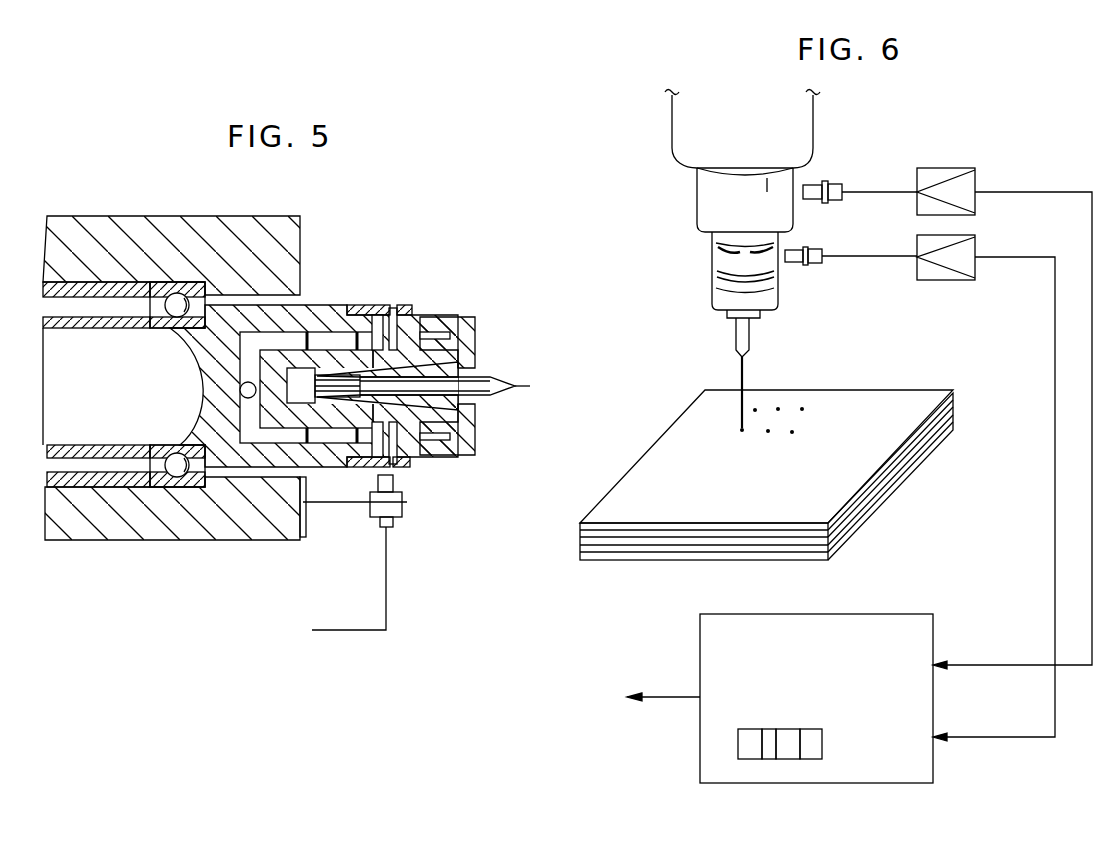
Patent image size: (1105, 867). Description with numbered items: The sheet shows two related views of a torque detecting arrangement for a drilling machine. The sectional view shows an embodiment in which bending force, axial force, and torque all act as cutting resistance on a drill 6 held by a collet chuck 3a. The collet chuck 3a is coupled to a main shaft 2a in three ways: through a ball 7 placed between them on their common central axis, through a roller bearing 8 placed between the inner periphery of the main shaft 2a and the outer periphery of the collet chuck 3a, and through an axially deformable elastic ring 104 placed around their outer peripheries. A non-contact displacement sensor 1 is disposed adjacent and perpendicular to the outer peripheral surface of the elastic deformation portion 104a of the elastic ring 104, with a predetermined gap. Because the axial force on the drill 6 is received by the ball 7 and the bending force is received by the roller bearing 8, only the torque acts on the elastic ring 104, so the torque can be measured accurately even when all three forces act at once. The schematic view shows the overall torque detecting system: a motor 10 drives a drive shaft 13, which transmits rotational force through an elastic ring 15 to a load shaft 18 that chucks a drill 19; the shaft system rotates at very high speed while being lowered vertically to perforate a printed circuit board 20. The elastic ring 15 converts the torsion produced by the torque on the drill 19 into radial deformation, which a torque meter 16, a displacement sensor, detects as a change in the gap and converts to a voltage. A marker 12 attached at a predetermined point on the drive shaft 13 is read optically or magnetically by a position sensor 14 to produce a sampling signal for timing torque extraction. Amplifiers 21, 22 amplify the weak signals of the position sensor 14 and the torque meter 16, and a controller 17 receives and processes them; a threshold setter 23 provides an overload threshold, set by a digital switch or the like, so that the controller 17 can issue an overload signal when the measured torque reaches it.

In FIG. 5, the non-contact displacement sensor 1 is at (380, 520).
In FIG. 5, the main shaft 2a is at (313, 460).
In FIG. 5, the collet chuck 3a is at (400, 462).
In FIG. 5, the drill 6 is at (480, 390).
In FIG. 5, the ball 7 is at (248, 398).
In FIG. 5, the roller bearing 8 is at (328, 437).
In FIG. 5, the elastic ring 104 is at (385, 305).
In FIG. 5, the elastic deformation portion 104a is at (385, 468).
In FIG. 6, the motor 10 is at (797, 124).
In FIG. 6, the marker 12 is at (767, 190).
In FIG. 6, the drive shaft 13 is at (710, 210).
In FIG. 6, the position sensor 14 is at (833, 196).
In FIG. 6, the elastic ring 15 is at (722, 264).
In FIG. 6, the torque meter 16 is at (815, 262).
In FIG. 6, the controller 17 is at (905, 614).
In FIG. 6, the load shaft 18 is at (725, 302).
In FIG. 6, the drill 19 is at (750, 338).
In FIG. 6, the printed circuit board 20 is at (906, 400).
In FIG. 6, the amplifier 21 is at (960, 168).
In FIG. 6, the amplifier 22 is at (976, 245).
In FIG. 6, the threshold setter 23 is at (804, 729).